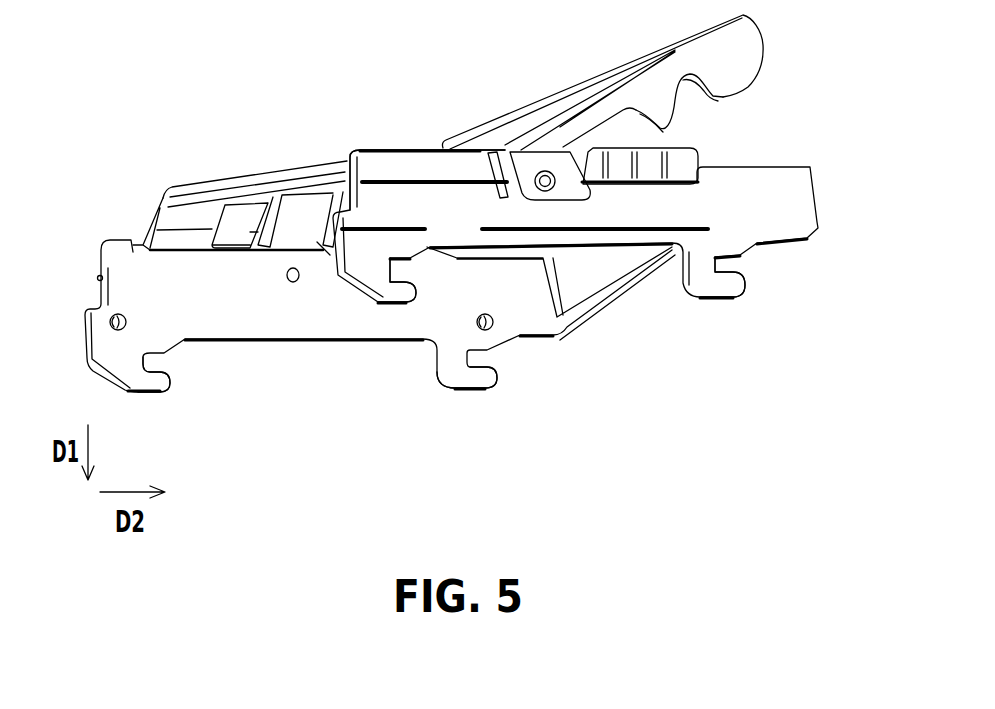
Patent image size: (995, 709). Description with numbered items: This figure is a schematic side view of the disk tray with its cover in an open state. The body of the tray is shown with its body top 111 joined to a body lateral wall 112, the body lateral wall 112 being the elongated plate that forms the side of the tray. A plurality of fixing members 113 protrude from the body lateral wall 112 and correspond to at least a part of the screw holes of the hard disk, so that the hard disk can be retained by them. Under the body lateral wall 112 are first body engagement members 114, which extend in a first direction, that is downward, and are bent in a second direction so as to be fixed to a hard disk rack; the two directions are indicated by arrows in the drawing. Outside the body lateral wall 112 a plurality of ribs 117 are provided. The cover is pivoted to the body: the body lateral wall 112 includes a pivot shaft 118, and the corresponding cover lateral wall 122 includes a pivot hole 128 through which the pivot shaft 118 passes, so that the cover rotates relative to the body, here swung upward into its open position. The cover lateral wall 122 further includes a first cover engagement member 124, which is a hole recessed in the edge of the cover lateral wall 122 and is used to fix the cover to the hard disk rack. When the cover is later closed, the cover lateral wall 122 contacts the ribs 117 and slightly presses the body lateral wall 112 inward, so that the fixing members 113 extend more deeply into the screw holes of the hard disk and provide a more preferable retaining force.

The body top 111 is at (237, 190).
The body lateral wall 112 is at (267, 323).
The fixing member 113 is at (110, 313).
The first body engagement member 114 is at (155, 382).
The rib 117 is at (700, 163).
The pivot shaft 118 is at (532, 173).
The cover lateral wall 122 is at (752, 40).
The first cover engagement member 124 is at (696, 107).
The pivot hole 128 is at (553, 152).